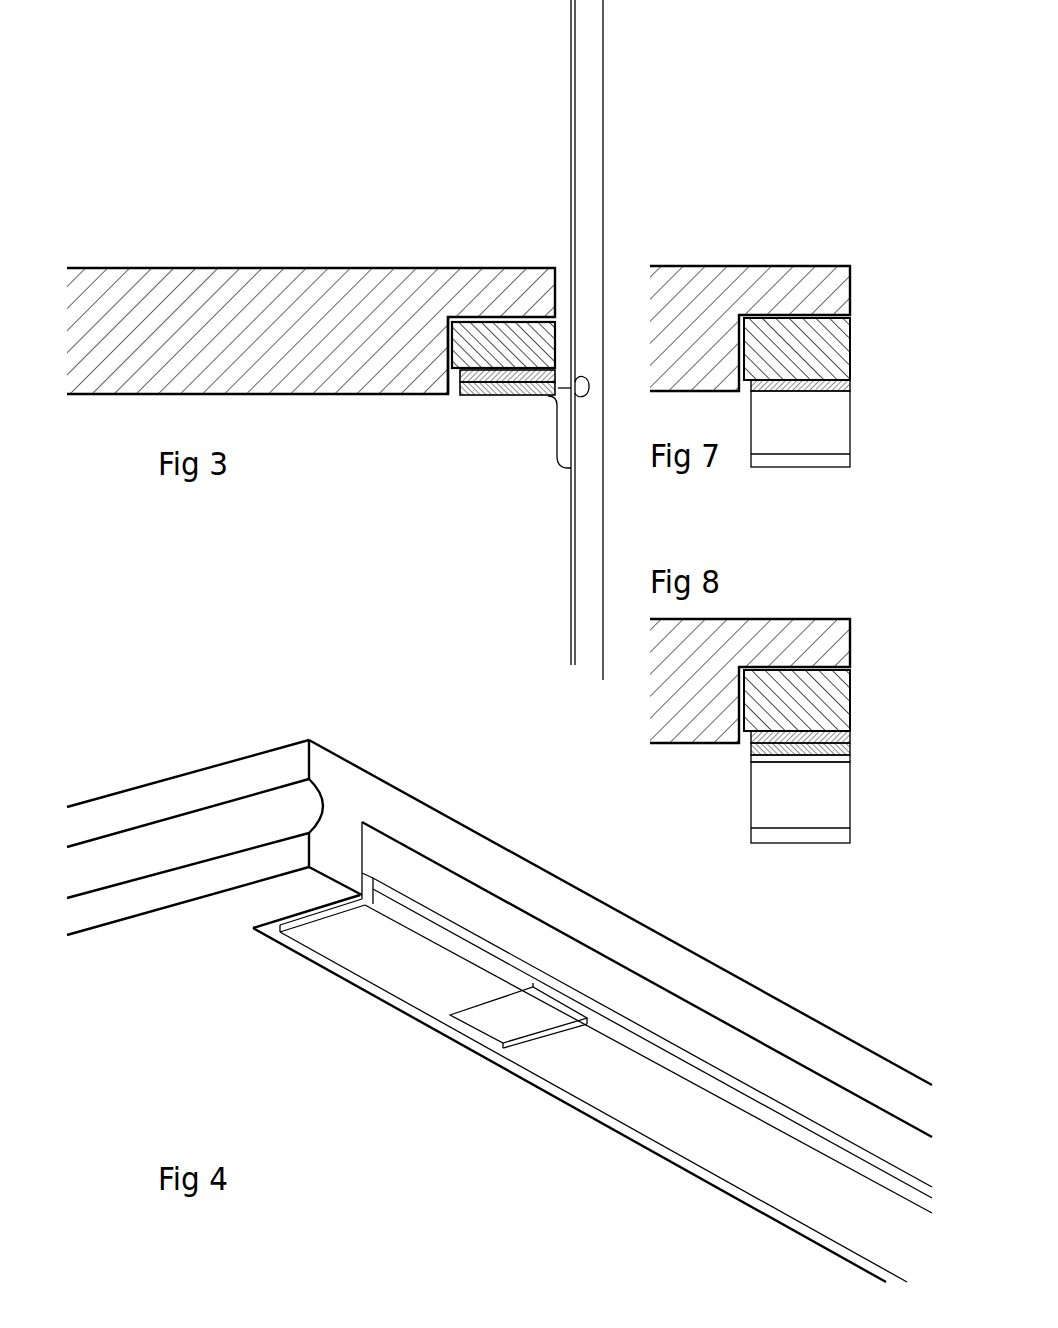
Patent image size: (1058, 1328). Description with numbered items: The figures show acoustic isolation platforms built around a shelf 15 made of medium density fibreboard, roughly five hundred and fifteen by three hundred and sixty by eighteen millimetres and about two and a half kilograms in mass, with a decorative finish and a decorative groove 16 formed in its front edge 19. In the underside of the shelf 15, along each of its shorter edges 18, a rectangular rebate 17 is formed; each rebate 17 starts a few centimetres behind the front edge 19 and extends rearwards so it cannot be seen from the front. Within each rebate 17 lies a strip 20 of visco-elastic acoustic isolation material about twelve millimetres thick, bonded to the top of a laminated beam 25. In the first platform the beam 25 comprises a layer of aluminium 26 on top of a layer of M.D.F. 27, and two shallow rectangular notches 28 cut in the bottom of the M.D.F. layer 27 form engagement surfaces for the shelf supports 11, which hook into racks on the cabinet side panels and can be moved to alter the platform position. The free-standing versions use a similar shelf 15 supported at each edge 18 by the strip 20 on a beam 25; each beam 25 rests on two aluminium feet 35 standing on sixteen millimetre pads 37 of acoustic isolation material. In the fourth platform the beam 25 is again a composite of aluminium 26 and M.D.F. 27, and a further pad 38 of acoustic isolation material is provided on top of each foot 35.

In FIG. 3, the shelf support 11 is at (565, 423).
In FIG. 3, the shelf 15 is at (297, 305).
In FIG. 7, the shelf 15 is at (672, 300).
In FIG. 8, the shelf 15 is at (743, 633).
In FIG. 4, the shelf 15 is at (448, 840).
In FIG. 4, the decorative groove 16 is at (171, 842).
In FIG. 3, the rectangular rebate 17 is at (470, 315).
In FIG. 4, the rectangular rebate 17 is at (383, 830).
In FIG. 4, the shorter edge 18 is at (566, 883).
In FIG. 4, the front edge 19 is at (131, 815).
In FIG. 3, the strip of acoustic isolation material 20 is at (500, 340).
In FIG. 7, the strip of acoustic isolation material 20 is at (813, 336).
In FIG. 8, the strip of acoustic isolation material 20 is at (812, 680).
In FIG. 4, the strip of acoustic isolation material 20 is at (506, 925).
In FIG. 7, the laminated beam 25 is at (815, 382).
In FIG. 4, the laminated beam 25 is at (347, 940).
In FIG. 3, the layer of aluminium 26 is at (450, 392).
In FIG. 8, the layer of aluminium 26 is at (808, 733).
In FIG. 4, the layer of aluminium 26 is at (616, 1017).
In FIG. 3, the layer of M.D.F. 27 is at (508, 392).
In FIG. 8, the layer of M.D.F. 27 is at (813, 748).
In FIG. 4, the layer of M.D.F. 27 is at (633, 1042).
In FIG. 4, the rectangular notch 28 is at (490, 1018).
In FIG. 7, the aluminium foot 35 is at (815, 430).
In FIG. 8, the aluminium foot 35 is at (807, 797).
In FIG. 7, the pad of acoustic isolation material 37 is at (790, 460).
In FIG. 8, the pad of acoustic isolation material 37 is at (808, 837).
In FIG. 8, the pad of acoustic isolation material 38 is at (800, 759).